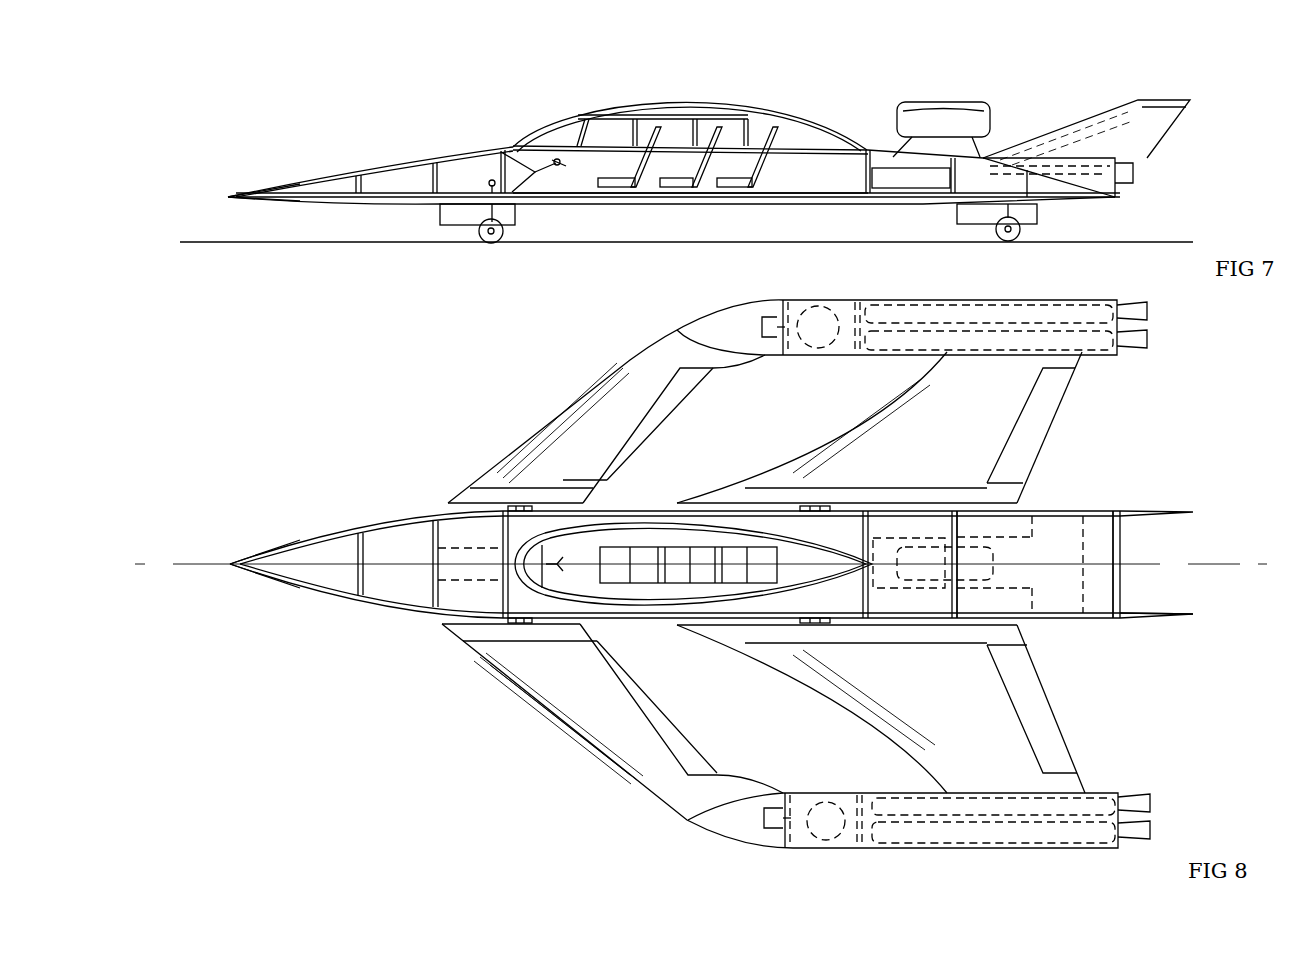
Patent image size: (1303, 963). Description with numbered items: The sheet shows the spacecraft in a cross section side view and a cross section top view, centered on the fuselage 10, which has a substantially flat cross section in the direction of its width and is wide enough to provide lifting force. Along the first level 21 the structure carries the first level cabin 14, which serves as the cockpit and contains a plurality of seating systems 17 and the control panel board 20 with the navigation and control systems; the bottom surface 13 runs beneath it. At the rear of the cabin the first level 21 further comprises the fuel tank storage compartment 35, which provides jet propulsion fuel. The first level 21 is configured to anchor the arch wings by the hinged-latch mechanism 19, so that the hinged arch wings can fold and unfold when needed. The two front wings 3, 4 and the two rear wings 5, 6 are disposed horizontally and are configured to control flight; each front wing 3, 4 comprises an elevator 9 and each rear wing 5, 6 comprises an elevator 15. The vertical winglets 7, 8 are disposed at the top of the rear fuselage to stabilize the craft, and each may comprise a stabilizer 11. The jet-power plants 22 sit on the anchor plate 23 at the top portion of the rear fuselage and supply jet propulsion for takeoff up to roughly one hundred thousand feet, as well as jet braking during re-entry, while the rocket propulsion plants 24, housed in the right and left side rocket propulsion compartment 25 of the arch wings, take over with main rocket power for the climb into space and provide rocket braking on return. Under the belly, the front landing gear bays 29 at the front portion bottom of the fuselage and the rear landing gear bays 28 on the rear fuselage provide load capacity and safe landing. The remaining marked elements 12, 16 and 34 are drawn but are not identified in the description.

In FIG. 8, the front wing 3 is at (590, 547).
In FIG. 8, the front wing 4 is at (607, 734).
In FIG. 8, the rear wing 5 is at (1020, 384).
In FIG. 8, the rear wing 6 is at (990, 690).
In FIG. 7, the vertical winglet 7 is at (1081, 140).
In FIG. 8, the vertical winglet 7 is at (1105, 513).
In FIG. 8, the vertical winglet 8 is at (1137, 619).
In FIG. 8, the elevator 9 is at (628, 440).
In FIG. 7, the fuselage 10 is at (470, 152).
In FIG. 8, the fuselage 10 is at (403, 528).
In FIG. 7, the stabilizer 11 is at (1154, 137).
In FIG. 7, the forward fuselage frame 12 is at (376, 176).
In FIG. 8, the forward fuselage frame 12 is at (352, 548).
In FIG. 7, the bottom surface 13 is at (598, 200).
In FIG. 7, the first level cabin 14 is at (662, 112).
In FIG. 8, the elevator 15 is at (1043, 405).
In FIG. 7, the nose 16 is at (261, 192).
In FIG. 8, the nose 16 is at (285, 548).
In FIG. 7, the seating systems 17 is at (643, 170).
In FIG. 8, the seating systems 17 is at (653, 555).
In FIG. 8, the hinged-latch mechanism 19 is at (530, 506).
In FIG. 7, the control panel board 20 is at (538, 178).
In FIG. 8, the control panel board 20 is at (528, 565).
In FIG. 7, the first level 21 is at (798, 195).
In FIG. 7, the jet-power plants 22 is at (918, 107).
In FIG. 8, the jet-power plants 22 is at (983, 563).
In FIG. 7, the anchor plate 23 is at (957, 146).
In FIG. 8, the rocket propulsion plants 24 is at (1150, 313).
In FIG. 8, the rocket propulsion compartment 25 is at (789, 324).
In FIG. 7, the rear landing gear bays 28 is at (459, 185).
In FIG. 8, the rear landing gear bays 28 is at (1030, 518).
In FIG. 7, the front landing gear bays 29 is at (471, 237).
In FIG. 8, the air inlet 34 is at (712, 330).
In FIG. 7, the fuel tank storage compartment 35 is at (902, 183).
In FIG. 8, the fuel tank storage compartment 35 is at (887, 580).